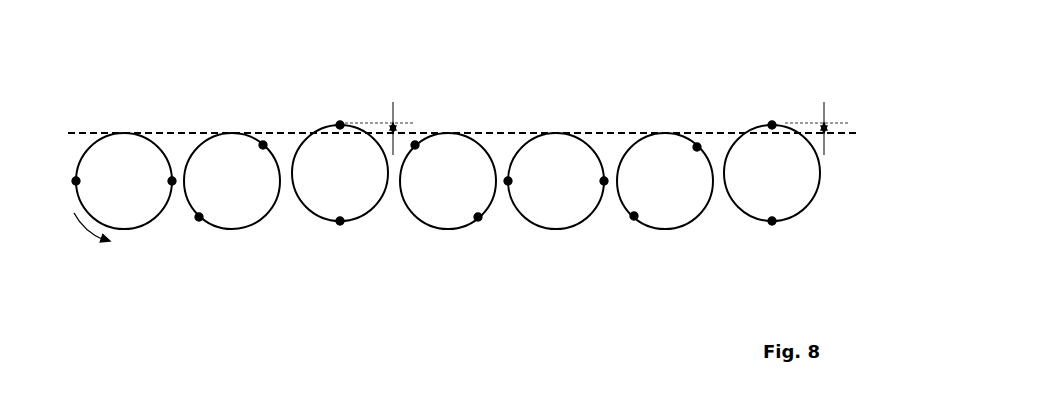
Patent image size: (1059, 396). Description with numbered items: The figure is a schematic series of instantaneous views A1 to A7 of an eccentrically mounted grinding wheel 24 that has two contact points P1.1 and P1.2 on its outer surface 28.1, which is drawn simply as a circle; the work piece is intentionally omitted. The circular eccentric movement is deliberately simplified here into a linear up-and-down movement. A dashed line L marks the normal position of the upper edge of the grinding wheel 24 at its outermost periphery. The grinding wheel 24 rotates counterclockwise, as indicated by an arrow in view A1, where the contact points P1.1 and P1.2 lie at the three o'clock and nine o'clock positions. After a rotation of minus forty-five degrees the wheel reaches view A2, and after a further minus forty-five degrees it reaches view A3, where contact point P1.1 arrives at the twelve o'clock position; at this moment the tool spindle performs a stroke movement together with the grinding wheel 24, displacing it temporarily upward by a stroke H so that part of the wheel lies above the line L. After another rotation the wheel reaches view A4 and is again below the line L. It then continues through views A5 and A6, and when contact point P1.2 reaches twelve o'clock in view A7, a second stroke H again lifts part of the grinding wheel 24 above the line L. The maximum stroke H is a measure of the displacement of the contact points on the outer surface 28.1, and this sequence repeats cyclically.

The grinding wheel 24 is at (88, 105).
The outer surface 28.1 is at (150, 135).
The contact point P1.1 is at (531, 196).
The contact point P1.2 is at (407, 177).
The instantaneous view A1 is at (140, 193).
The instantaneous view A2 is at (232, 211).
The instantaneous view A3 is at (340, 207).
The instantaneous view A4 is at (448, 211).
The instantaneous view A5 is at (556, 211).
The instantaneous view A6 is at (665, 211).
The instantaneous view A7 is at (772, 207).
The dashed line L is at (465, 133).
The stroke H is at (596, 126).